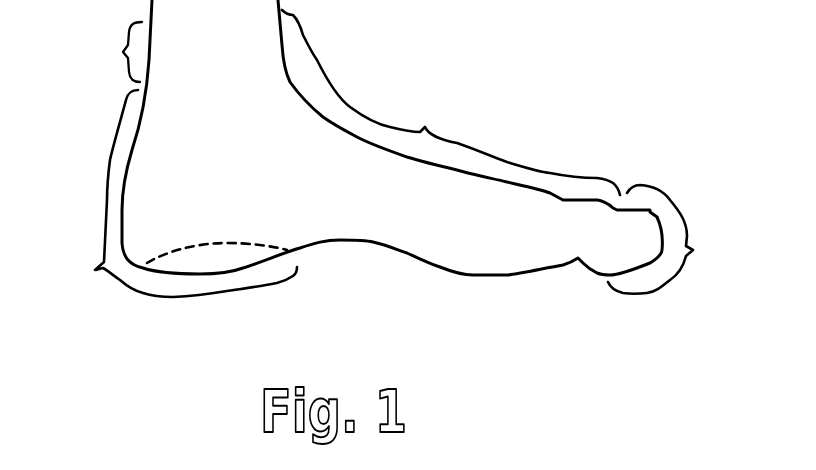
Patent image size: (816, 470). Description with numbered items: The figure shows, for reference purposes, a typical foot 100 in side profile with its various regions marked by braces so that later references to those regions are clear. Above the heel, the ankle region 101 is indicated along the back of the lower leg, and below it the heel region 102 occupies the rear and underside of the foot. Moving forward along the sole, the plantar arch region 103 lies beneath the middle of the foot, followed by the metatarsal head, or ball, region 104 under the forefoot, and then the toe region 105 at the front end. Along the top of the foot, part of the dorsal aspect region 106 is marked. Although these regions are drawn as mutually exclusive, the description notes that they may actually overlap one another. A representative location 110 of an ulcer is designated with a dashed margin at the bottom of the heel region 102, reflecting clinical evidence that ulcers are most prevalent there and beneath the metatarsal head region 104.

The foot 100 is at (311, 186).
The ankle region 101 is at (109, 52).
The heel region 102 is at (171, 193).
The plantar arch region 103 is at (378, 258).
The metatarsal head region 104 is at (597, 283).
The toe region 105 is at (674, 239).
The dorsal aspect region 106 is at (451, 102).
The ulcer location 110 is at (200, 260).